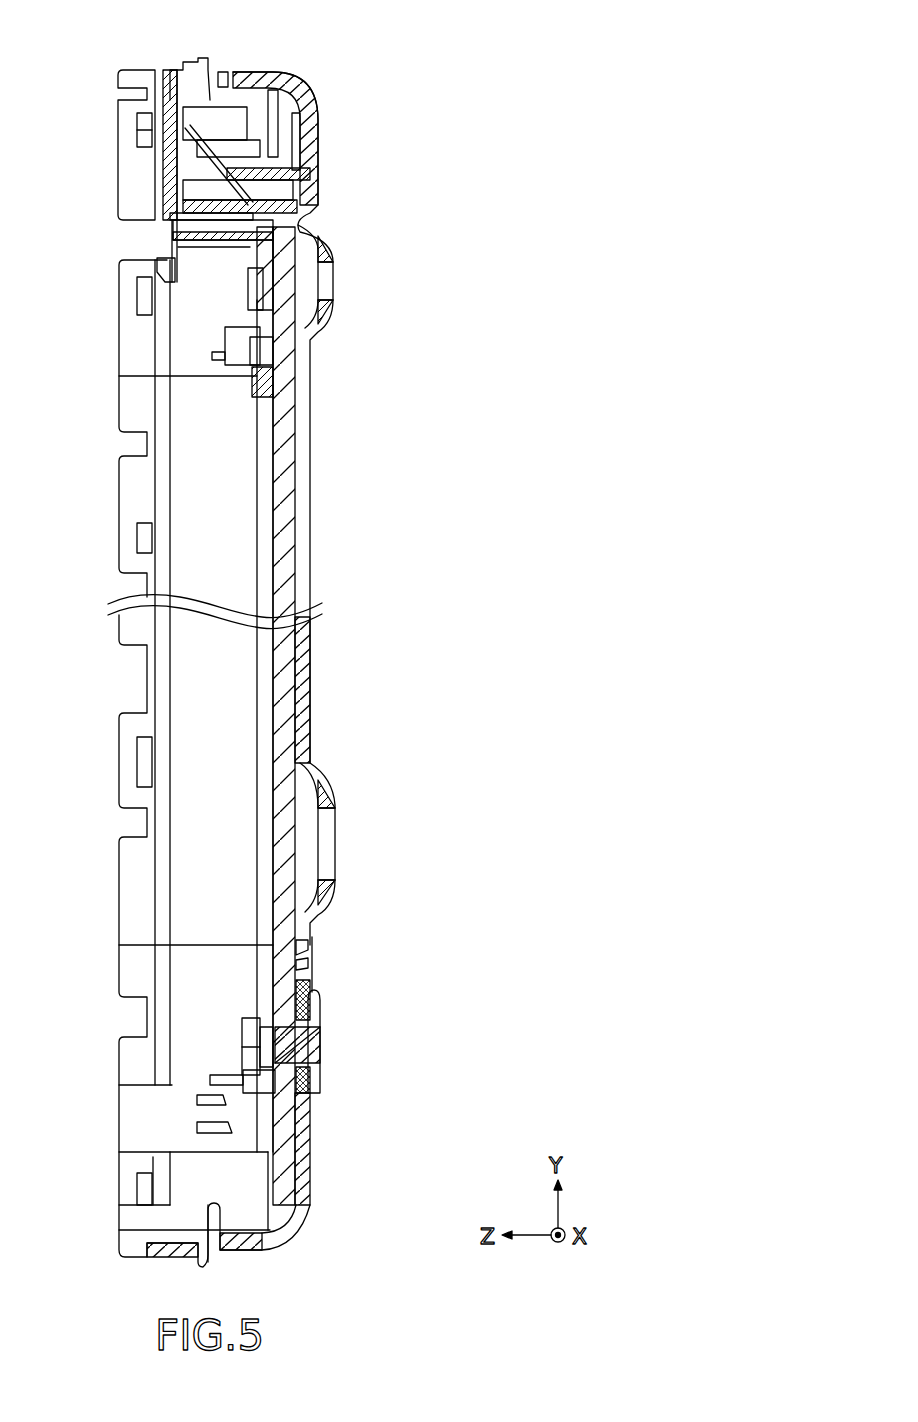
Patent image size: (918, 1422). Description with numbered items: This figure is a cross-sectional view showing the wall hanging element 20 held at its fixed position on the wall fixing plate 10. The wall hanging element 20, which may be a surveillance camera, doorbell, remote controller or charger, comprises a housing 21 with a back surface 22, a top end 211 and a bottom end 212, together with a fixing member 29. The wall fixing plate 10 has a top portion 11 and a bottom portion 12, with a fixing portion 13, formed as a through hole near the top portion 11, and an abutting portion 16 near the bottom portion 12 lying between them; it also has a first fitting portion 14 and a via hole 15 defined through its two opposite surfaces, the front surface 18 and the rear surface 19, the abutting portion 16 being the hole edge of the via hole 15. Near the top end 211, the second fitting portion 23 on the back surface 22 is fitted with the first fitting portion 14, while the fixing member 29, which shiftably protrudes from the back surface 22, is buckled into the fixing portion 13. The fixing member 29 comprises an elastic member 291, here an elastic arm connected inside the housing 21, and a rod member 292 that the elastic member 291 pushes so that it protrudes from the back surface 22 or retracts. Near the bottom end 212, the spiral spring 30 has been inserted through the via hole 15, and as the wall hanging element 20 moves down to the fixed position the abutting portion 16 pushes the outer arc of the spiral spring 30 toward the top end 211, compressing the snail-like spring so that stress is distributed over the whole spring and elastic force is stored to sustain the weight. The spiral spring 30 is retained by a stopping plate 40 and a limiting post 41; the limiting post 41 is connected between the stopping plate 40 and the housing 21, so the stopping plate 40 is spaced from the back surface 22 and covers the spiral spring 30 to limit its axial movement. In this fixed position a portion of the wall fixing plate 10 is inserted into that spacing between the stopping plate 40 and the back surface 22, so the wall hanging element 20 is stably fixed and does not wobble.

The wall fixing plate 10 is at (323, 324).
The top portion 11 is at (300, 150).
The bottom portion 12 is at (302, 1155).
The fixing portion 13 is at (316, 213).
The first fitting portion 14 is at (315, 125).
The via hole 15 is at (305, 961).
The abutting portion 16 is at (320, 1087).
The front surface 18 is at (293, 668).
The rear surface 19 is at (308, 648).
The wall hanging element 20 is at (112, 76).
The housing 21 is at (143, 186).
The back surface 22 is at (292, 462).
The second fitting portion 23 is at (310, 100).
The fixing member 29 is at (458, 163).
The elastic member 291 is at (322, 203).
The rod member 292 is at (322, 178).
The spiral spring 30 is at (313, 978).
The stopping plate 40 is at (318, 1012).
The limiting post 41 is at (288, 1047).
The top end 211 is at (187, 76).
The bottom end 212 is at (250, 1243).